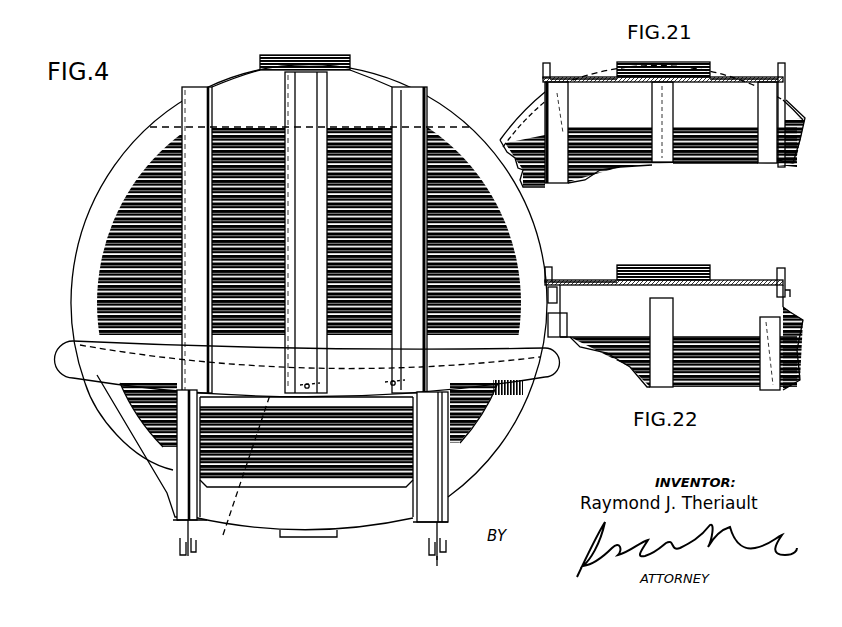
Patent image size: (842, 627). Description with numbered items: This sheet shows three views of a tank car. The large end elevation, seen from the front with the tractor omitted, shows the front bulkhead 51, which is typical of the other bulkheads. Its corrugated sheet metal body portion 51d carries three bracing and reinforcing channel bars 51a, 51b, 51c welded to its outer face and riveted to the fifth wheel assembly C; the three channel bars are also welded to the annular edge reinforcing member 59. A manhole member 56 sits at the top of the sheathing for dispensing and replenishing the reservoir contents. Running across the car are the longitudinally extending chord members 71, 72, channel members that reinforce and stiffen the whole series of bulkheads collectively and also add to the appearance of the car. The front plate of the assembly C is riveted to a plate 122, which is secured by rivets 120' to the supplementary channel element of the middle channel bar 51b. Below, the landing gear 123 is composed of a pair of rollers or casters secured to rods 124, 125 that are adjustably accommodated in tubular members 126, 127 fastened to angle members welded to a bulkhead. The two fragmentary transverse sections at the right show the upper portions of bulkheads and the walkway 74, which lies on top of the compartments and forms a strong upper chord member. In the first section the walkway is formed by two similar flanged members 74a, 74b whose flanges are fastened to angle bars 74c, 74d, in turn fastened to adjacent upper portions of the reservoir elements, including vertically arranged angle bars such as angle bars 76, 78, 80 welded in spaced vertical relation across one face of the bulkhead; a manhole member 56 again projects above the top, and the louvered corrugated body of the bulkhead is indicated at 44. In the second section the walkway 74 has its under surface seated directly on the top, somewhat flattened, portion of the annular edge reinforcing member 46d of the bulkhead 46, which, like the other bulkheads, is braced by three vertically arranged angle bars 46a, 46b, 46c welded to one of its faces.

In FIG. 21, the louver assembly 44 is at (622, 170).
In FIG. 22, the bulkhead 46 is at (626, 370).
In FIG. 22, the angle bar 46a is at (554, 320).
In FIG. 22, the angle bar 46b is at (661, 305).
In FIG. 22, the angle bar 46c is at (770, 391).
In FIG. 22, the annular edge reinforcing member 46d is at (740, 293).
In FIG. 4, the front bulkhead 51 is at (243, 64).
In FIG. 4, the channel bar 51a is at (190, 94).
In FIG. 4, the middle channel bar 51b is at (305, 80).
In FIG. 4, the channel bar 51c is at (415, 92).
In FIG. 4, the corrugated sheet metal body portion 51d is at (447, 170).
In FIG. 4, the manhole member 56 is at (345, 62).
In FIG. 21, the manhole member 56 is at (705, 65).
In FIG. 22, the manhole member 56 is at (656, 266).
In FIG. 4, the annular edge reinforcing member 59 is at (119, 158).
In FIG. 4, the chord member 71 is at (61, 380).
In FIG. 4, the chord member 72 is at (553, 378).
In FIG. 21, the walkway 74 is at (581, 77).
In FIG. 22, the walkway 74 is at (582, 280).
In FIG. 21, the flanged member 74a is at (590, 77).
In FIG. 22, the flanged member 74a is at (604, 280).
In FIG. 21, the flanged member 74b is at (740, 77).
In FIG. 21, the angle bar 74c is at (545, 90).
In FIG. 21, the angle bar 74d is at (782, 63).
In FIG. 21, the angle bar 76 is at (546, 63).
In FIG. 21, the angle bar 78 is at (662, 85).
In FIG. 21, the angle bar 80 is at (766, 90).
In FIG. 4, the rivets 120' is at (352, 365).
In FIG. 4, the plate 122 is at (510, 372).
In FIG. 4, the landing gear 123 is at (433, 563).
In FIG. 4, the rod 124 is at (172, 531).
In FIG. 4, the rod 125 is at (448, 526).
In FIG. 4, the tubular member 126 is at (150, 485).
In FIG. 4, the tubular member 127 is at (442, 484).
In FIG. 4, the fifth wheel assembly C is at (246, 477).